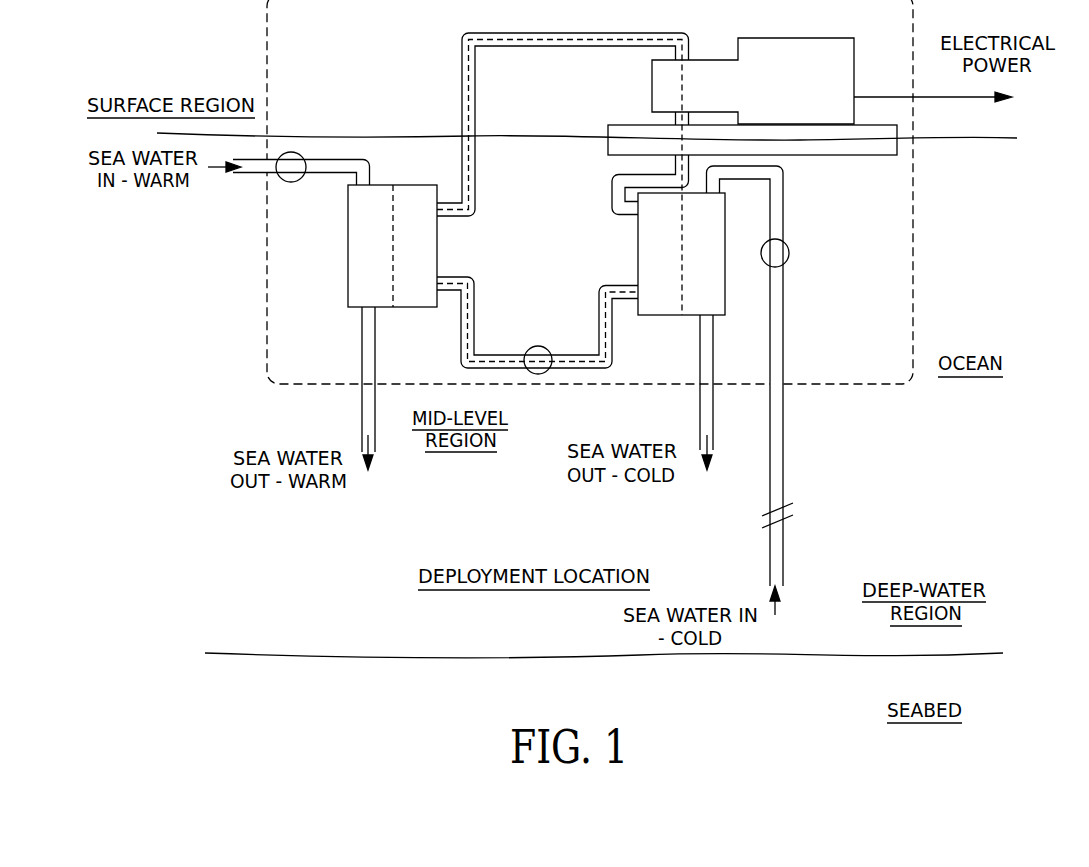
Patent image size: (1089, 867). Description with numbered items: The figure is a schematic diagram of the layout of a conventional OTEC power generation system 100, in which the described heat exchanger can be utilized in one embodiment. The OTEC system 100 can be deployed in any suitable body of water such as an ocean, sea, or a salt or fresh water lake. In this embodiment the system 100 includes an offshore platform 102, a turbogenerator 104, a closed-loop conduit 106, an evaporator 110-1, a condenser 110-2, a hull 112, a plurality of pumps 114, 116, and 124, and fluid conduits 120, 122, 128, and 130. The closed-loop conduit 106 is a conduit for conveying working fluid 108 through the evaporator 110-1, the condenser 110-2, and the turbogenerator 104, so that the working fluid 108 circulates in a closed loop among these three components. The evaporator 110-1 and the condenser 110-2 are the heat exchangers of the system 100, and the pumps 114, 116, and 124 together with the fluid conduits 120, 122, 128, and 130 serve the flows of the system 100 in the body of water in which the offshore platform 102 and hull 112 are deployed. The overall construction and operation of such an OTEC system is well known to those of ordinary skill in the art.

The OTEC power generation system 100 is at (248, 62).
The offshore platform 102 is at (913, 218).
The turbogenerator 104 is at (828, 38).
The closed-loop conduit 106 is at (462, 97).
The working fluid 108 is at (475, 114).
The evaporator 110-1 is at (348, 246).
The condenser 110-2 is at (638, 240).
The hull 112 is at (990, 140).
The pump 114 is at (539, 346).
The pump 116 is at (292, 152).
The fluid conduit 120 is at (243, 175).
The fluid conduit 122 is at (362, 410).
The pump 124 is at (787, 243).
The fluid conduit 128 is at (783, 546).
The fluid conduit 130 is at (700, 410).